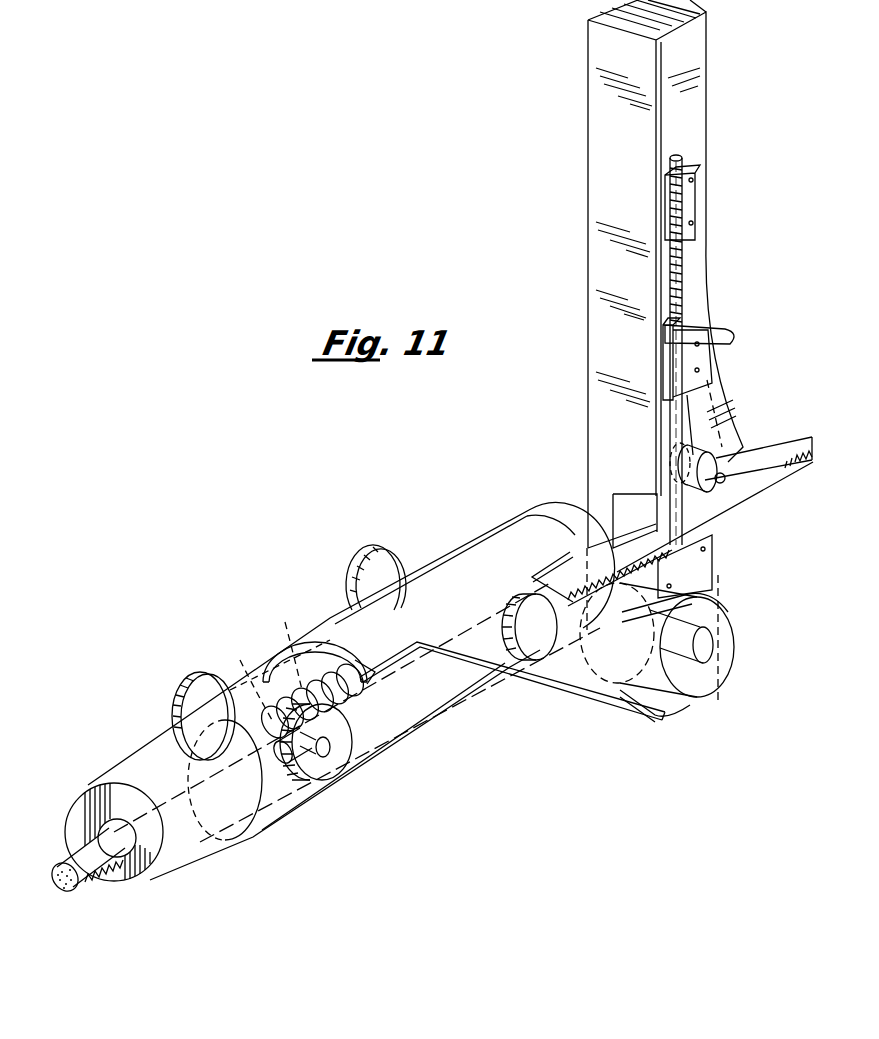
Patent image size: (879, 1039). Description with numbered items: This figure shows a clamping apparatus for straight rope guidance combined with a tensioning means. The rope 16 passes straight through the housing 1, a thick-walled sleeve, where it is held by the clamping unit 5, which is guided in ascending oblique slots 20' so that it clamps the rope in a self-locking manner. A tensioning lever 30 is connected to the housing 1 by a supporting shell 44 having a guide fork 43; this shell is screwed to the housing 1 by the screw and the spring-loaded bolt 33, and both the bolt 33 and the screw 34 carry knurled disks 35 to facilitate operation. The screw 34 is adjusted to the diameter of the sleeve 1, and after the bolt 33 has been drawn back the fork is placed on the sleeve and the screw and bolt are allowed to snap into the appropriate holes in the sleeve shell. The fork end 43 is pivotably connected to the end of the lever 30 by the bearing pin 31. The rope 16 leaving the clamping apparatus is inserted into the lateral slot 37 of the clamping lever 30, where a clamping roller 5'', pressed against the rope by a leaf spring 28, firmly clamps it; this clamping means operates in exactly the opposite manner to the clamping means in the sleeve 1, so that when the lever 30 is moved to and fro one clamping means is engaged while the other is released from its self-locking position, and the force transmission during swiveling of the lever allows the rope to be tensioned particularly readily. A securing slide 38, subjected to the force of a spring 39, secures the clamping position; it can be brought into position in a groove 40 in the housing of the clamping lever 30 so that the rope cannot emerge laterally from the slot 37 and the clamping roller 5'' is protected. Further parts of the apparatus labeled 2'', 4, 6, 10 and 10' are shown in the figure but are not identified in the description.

The housing 1 is at (525, 522).
The tube end face 2'' is at (103, 820).
The rod 4 is at (280, 644).
The clamping unit 5 is at (303, 687).
The clamping roller 5'' is at (730, 390).
The hub pin 6 is at (331, 752).
The collar 10 is at (195, 703).
The disk 10' is at (320, 766).
The rope 16 is at (795, 468).
The ascending oblique slots 20' is at (253, 785).
The leaf spring 28 is at (720, 470).
The tensioning lever 30 is at (605, 108).
The bearing pin 31 is at (707, 643).
The spring-loaded bolt 33 is at (392, 572).
The screw 34 is at (360, 572).
The knurled disks 35 is at (556, 660).
The lateral slot 37 is at (628, 498).
The securing slide 38 is at (733, 333).
The spring 39 is at (687, 283).
The groove 40 is at (688, 300).
The guide fork 43 is at (686, 708).
The supporting shell 44 is at (335, 640).